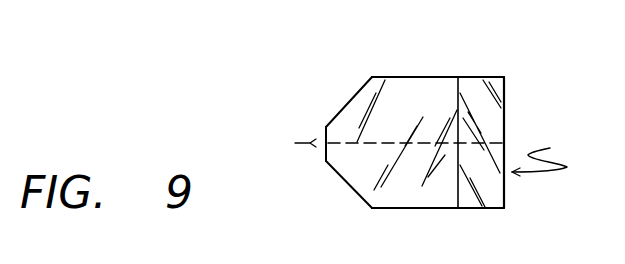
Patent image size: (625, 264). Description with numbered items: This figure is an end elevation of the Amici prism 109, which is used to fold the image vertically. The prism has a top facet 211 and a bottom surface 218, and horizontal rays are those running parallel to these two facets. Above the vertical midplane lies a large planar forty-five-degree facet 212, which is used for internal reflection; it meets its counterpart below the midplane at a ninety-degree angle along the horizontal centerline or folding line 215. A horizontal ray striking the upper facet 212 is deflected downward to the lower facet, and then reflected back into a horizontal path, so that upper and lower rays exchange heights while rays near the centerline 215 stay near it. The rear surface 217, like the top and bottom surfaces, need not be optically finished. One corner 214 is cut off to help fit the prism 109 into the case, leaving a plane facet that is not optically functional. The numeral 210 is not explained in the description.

The Amici prism 109 is at (555, 157).
The prism beam splitter 210 is at (357, 143).
The top facet 211 is at (438, 78).
The upper forty-five-degree facet 212 is at (352, 100).
The cut-off corner 214 is at (353, 200).
The centerline (folding line) 215 is at (305, 143).
The rear surface 217 is at (505, 127).
The bottom surface 218 is at (463, 210).